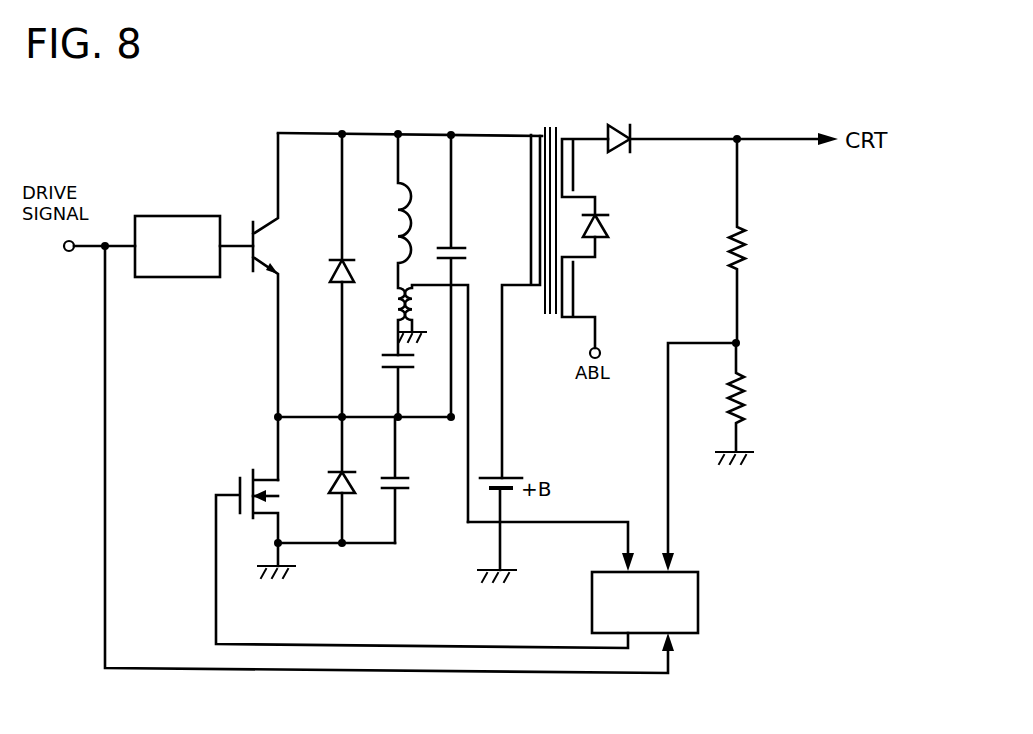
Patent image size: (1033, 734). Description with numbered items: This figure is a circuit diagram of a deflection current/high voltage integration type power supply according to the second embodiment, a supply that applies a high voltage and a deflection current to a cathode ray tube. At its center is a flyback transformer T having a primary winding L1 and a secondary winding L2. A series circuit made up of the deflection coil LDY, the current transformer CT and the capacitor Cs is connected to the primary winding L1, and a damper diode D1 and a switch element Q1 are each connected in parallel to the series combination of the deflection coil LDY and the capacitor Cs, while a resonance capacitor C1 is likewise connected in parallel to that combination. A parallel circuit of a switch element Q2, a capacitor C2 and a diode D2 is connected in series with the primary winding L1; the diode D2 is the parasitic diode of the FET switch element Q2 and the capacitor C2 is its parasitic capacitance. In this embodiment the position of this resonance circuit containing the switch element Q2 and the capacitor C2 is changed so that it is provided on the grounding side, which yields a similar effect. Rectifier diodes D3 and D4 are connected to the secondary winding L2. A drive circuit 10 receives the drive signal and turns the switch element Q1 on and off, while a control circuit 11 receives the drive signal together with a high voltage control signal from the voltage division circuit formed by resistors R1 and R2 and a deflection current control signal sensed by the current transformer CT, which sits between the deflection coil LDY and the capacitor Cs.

The drive circuit 10 is at (157, 216).
The control circuit 11 is at (697, 572).
The switch element Q1 is at (246, 219).
The switch element Q2 is at (263, 462).
The damper diode D1 is at (356, 264).
The diode D2 is at (352, 480).
The rectifier diode D3 is at (616, 125).
The rectifier diode D4 is at (609, 223).
The resonance capacitor C1 is at (467, 257).
The capacitor C2 is at (406, 480).
The capacitor Cs is at (414, 361).
The current transformer CT is at (433, 403).
The deflection coil LDY is at (421, 244).
The primary winding L1 is at (522, 219).
The secondary winding L2 is at (574, 179).
The flyback transformer T is at (566, 122).
The resistor R1 is at (749, 251).
The resistor R2 is at (746, 396).